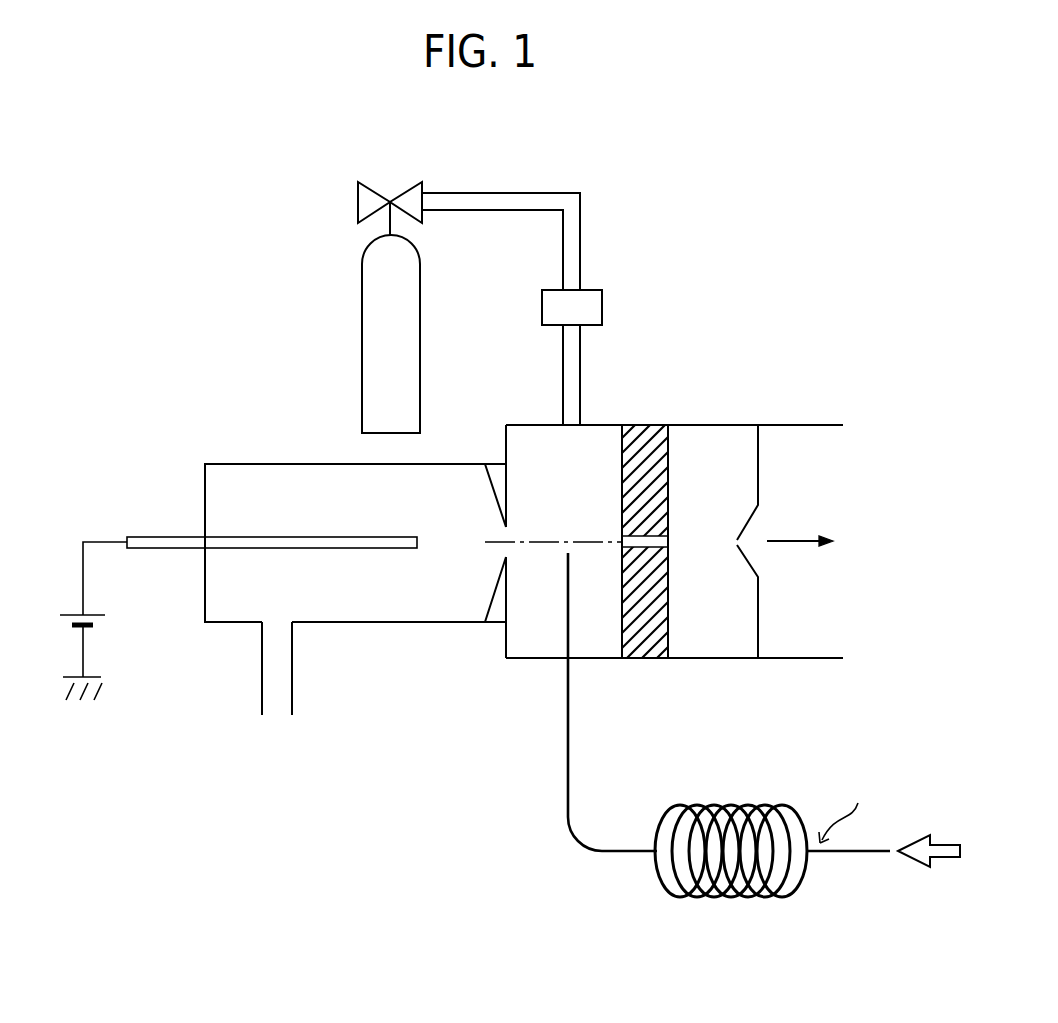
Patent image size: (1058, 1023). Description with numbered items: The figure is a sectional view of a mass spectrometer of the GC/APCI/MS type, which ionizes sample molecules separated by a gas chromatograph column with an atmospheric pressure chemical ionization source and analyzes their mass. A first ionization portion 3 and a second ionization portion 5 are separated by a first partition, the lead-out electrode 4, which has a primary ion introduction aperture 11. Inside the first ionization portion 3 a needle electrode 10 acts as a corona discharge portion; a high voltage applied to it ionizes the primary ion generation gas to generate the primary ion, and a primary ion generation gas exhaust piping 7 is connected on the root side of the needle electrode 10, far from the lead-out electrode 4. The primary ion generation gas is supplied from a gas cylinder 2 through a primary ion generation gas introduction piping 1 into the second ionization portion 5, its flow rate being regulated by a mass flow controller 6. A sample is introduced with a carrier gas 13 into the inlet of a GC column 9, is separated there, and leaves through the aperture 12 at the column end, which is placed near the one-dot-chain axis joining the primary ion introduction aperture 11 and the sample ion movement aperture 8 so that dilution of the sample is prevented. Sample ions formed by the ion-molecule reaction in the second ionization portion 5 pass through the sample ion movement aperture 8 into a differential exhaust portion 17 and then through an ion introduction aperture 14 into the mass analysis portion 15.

The primary ion generation gas introduction piping 1 is at (567, 343).
The gas cylinder 2 is at (374, 316).
The first ionization portion 3 is at (447, 527).
The lead-out electrode 4 is at (517, 466).
The second ionization portion 5 is at (552, 580).
The mass flow controller 6 is at (596, 308).
The primary ion generation gas exhaust piping 7 is at (278, 697).
The sample ion movement aperture 8 is at (643, 483).
The GC column 9 is at (728, 903).
The needle electrode 10 is at (350, 549).
The primary ion introduction aperture 11 is at (500, 544).
The aperture at the end of the GC column 12 is at (570, 542).
The carrier gas 13 is at (938, 865).
The ion introduction aperture 14 is at (737, 545).
The mass analysis portion 15 is at (815, 457).
The differential exhaust portion 17 is at (723, 457).